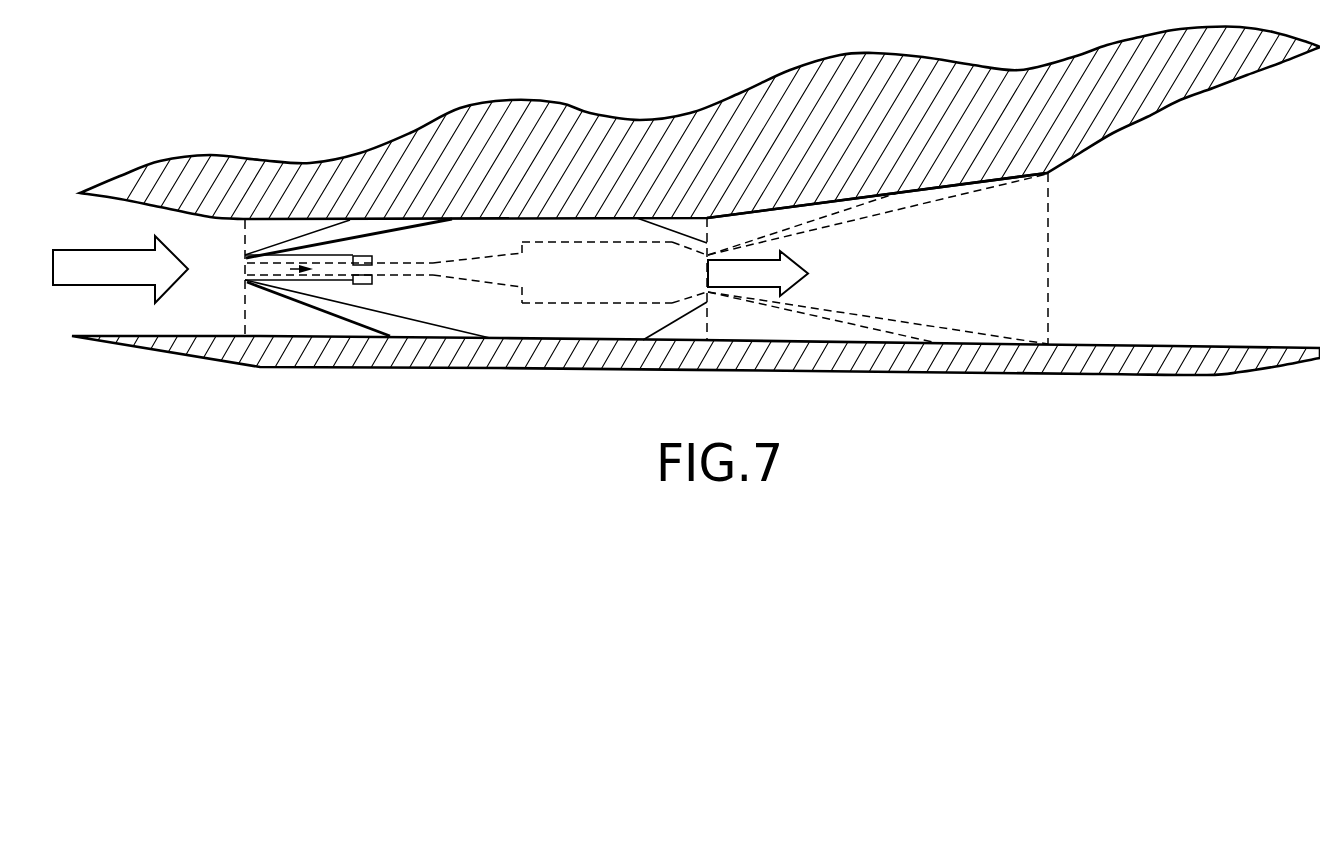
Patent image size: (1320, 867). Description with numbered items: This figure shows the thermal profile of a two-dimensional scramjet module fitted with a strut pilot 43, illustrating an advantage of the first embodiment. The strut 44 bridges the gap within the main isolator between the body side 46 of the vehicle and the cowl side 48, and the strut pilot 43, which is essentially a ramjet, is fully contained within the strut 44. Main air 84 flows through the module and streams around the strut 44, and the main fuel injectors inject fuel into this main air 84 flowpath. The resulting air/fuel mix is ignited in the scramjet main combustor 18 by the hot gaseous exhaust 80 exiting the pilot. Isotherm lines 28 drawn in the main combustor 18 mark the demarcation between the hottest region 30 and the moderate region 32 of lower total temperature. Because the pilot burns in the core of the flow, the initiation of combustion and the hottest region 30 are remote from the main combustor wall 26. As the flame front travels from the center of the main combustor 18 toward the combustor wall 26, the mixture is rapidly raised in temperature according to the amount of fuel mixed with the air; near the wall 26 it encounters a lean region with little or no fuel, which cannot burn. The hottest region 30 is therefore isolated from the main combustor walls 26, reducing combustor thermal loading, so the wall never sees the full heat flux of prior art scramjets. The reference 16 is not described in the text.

The inlet airflow 16 is at (97, 251).
The main air 84 is at (278, 313).
The strut 44 is at (412, 322).
The strut pilot 43 is at (575, 285).
The body side 46 is at (629, 187).
The cowl side 48 is at (653, 386).
The main combustor 18 is at (752, 336).
The hot gaseous exhaust 80 is at (794, 262).
The main combustor wall 26 is at (855, 183).
The isotherm lines 28 is at (947, 197).
The hottest region 30 is at (930, 294).
The moderate region 32 is at (880, 322).